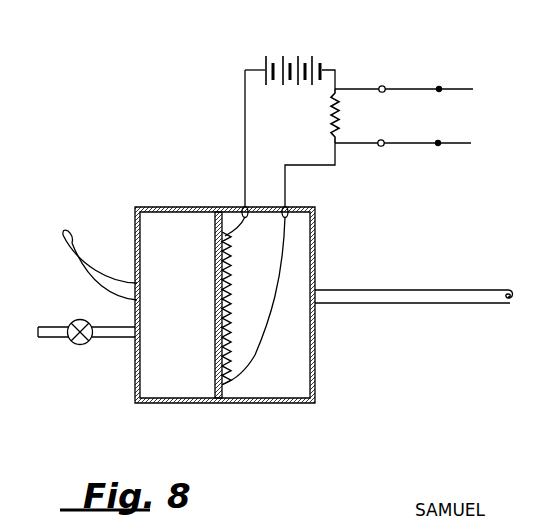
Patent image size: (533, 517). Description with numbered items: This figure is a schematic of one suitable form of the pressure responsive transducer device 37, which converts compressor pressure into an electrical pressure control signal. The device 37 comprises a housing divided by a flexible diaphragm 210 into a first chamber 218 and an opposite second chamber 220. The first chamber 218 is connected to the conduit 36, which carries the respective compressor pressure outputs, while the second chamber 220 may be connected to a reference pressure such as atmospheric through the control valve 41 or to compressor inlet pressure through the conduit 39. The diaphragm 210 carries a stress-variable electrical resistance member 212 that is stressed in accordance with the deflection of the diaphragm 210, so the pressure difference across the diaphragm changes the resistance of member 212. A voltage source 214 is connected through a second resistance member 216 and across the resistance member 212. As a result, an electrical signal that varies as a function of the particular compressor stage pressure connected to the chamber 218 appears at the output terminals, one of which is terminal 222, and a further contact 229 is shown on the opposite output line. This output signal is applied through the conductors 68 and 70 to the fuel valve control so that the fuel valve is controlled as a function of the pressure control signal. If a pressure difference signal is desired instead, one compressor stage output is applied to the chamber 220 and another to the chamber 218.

The voltage source 214 is at (300, 62).
The second resistance member 216 is at (342, 116).
The terminal 222 is at (381, 86).
The terminal contact 229 is at (381, 147).
The conductor 68 is at (439, 89).
The conductor 70 is at (438, 145).
The pressure responsive transducer device 37 is at (315, 233).
The flexible diaphragm 210 is at (218, 250).
The stress-variable electrical resistance member 212 is at (225, 285).
The first chamber 218 is at (300, 357).
The second chamber 220 is at (148, 368).
The conduit 39 is at (77, 262).
The control valve 41 is at (77, 347).
The conduit 36 is at (468, 297).